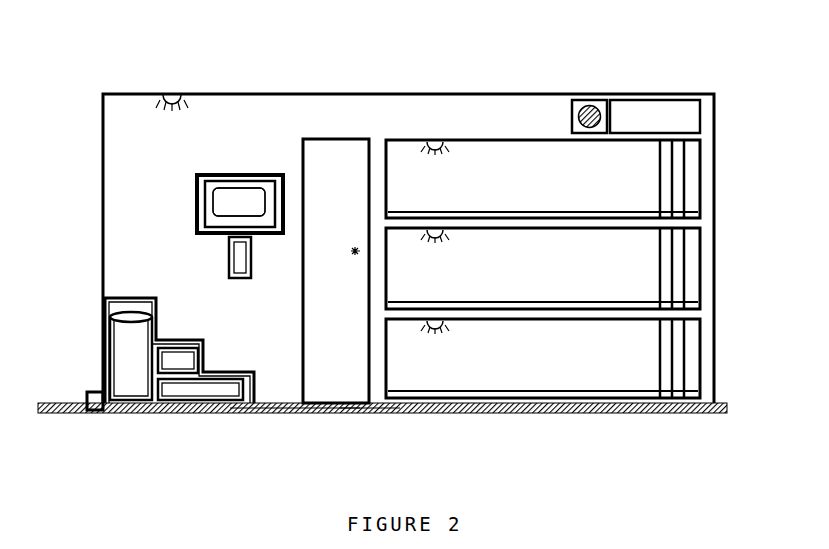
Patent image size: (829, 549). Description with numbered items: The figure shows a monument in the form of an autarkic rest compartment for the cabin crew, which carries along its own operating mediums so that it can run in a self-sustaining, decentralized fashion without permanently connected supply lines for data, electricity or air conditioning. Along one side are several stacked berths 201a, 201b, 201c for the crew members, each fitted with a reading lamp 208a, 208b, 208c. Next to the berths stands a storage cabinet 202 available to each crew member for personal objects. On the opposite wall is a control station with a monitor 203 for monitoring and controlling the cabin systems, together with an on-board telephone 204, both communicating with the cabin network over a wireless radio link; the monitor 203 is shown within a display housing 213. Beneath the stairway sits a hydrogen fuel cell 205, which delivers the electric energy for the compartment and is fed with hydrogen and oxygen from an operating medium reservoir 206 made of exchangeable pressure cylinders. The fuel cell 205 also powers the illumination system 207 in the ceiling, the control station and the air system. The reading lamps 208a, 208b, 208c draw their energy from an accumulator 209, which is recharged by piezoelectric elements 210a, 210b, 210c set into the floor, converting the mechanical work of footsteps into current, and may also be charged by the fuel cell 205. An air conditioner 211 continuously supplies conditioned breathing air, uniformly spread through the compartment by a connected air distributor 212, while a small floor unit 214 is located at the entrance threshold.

The berth 201a is at (617, 183).
The berth 201b is at (618, 268).
The berth 201c is at (623, 370).
The storage cabinet 202 is at (338, 150).
The monitor 203 is at (238, 180).
The on-board telephone 204 is at (228, 253).
The hydrogen fuel cell 205 is at (185, 413).
The operating medium reservoir 206 is at (118, 326).
The illumination system 207 is at (173, 94).
The reading lamp 208a is at (433, 141).
The reading lamp 208b is at (435, 240).
The reading lamp 208c is at (435, 331).
The accumulator 209 is at (170, 364).
The piezoelectric element 210a is at (273, 413).
The piezoelectric element 210b is at (325, 413).
The piezoelectric element 210c is at (350, 413).
The air conditioner 211 is at (651, 113).
The air distributor 212 is at (584, 99).
The display unit 213 is at (197, 197).
The sensor 214 is at (88, 400).